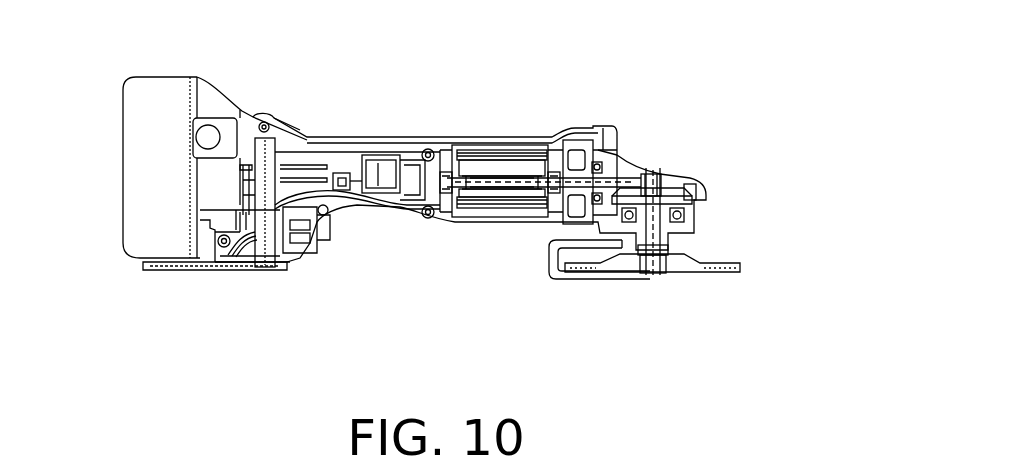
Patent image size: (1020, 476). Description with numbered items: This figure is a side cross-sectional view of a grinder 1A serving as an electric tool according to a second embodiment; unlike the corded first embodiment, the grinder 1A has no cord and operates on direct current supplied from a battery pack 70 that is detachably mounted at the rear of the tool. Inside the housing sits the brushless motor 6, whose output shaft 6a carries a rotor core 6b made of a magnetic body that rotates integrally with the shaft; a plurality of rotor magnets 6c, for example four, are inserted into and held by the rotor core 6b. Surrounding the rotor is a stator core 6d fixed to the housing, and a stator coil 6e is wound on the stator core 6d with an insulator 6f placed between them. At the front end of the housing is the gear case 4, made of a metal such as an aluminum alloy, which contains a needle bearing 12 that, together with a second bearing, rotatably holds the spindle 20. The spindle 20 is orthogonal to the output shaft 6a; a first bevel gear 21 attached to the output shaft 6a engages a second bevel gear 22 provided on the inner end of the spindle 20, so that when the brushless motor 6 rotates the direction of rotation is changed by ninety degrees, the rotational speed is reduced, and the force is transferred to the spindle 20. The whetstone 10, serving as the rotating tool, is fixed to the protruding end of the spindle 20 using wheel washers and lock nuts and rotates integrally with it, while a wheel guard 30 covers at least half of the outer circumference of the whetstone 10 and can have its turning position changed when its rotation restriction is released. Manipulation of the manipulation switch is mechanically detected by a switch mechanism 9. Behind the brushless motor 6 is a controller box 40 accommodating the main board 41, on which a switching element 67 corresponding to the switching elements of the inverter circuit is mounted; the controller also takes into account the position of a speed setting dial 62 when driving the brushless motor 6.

The grinder 1A is at (523, 128).
The gear case 4 is at (677, 177).
The brushless motor 6 is at (520, 258).
The output shaft 6a is at (533, 187).
The rotor core 6b is at (517, 188).
The rotor magnets 6c is at (500, 195).
The stator core 6d is at (470, 217).
The stator coil 6e is at (458, 212).
The insulator 6f is at (552, 193).
The switch mechanism 9 is at (351, 170).
The whetstone 10 is at (737, 272).
The needle bearing 12 is at (665, 177).
The spindle 20 is at (648, 175).
The first bevel gear 21 is at (620, 142).
The second bevel gear 22 is at (690, 180).
The wheel guard 30 is at (614, 281).
The controller box 40 is at (242, 260).
The main board 41 is at (268, 262).
The speed setting dial 62 is at (305, 258).
The switching element 67 is at (298, 178).
The battery pack 70 is at (163, 76).